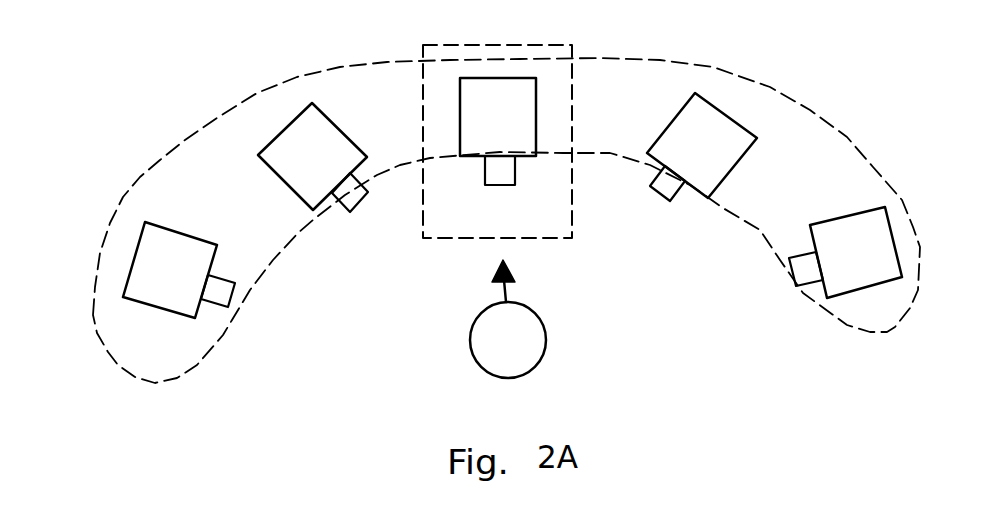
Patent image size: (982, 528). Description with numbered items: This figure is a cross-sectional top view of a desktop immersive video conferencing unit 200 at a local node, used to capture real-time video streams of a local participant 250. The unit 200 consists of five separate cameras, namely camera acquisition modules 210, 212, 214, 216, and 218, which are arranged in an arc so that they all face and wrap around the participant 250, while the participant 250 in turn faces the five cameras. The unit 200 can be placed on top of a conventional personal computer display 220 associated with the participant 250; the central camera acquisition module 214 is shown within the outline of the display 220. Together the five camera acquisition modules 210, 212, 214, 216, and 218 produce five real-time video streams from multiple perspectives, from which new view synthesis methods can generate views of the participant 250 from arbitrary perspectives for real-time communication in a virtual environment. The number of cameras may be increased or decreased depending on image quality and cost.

The unit 200 is at (170, 68).
The camera acquisition module 210 is at (186, 299).
The camera acquisition module 212 is at (313, 190).
The camera acquisition module 214 is at (480, 137).
The camera acquisition module 216 is at (711, 172).
The camera acquisition module 218 is at (840, 283).
The personal computer display 220 is at (560, 210).
The participant 250 is at (535, 349).